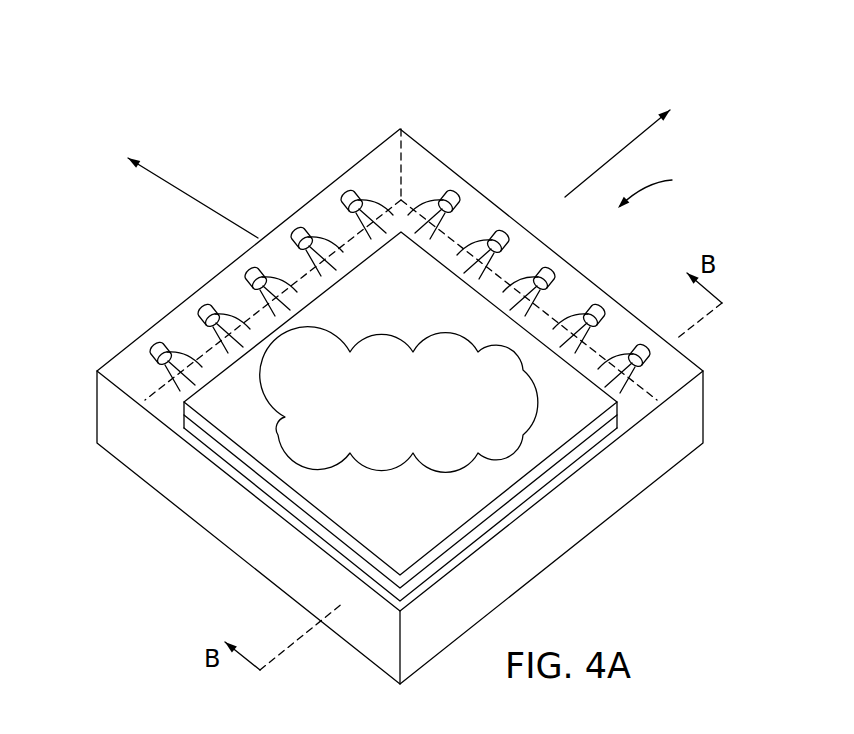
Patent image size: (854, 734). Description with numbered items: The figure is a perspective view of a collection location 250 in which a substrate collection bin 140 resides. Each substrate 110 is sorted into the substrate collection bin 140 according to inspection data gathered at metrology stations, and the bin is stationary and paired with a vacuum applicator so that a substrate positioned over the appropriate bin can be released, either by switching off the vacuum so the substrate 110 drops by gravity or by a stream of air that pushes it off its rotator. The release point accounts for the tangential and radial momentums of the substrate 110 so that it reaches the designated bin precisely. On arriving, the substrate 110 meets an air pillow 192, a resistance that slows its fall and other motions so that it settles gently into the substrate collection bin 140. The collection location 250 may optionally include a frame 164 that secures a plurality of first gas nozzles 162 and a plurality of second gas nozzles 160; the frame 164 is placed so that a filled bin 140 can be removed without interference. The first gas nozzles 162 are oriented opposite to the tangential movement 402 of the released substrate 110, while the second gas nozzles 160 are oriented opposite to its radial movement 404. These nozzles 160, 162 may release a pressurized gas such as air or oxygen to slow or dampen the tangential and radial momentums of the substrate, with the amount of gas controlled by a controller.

The collection location 250 is at (234, 95).
The frame 164 is at (693, 363).
The second gas nozzles 160 is at (630, 394).
The first gas nozzles 162 is at (435, 205).
The substrate 110 is at (427, 528).
The air pillow 192 is at (427, 408).
The tangential movement 402 is at (160, 181).
The radial movement 404 is at (633, 138).
The substrate collection bin 140 is at (668, 186).